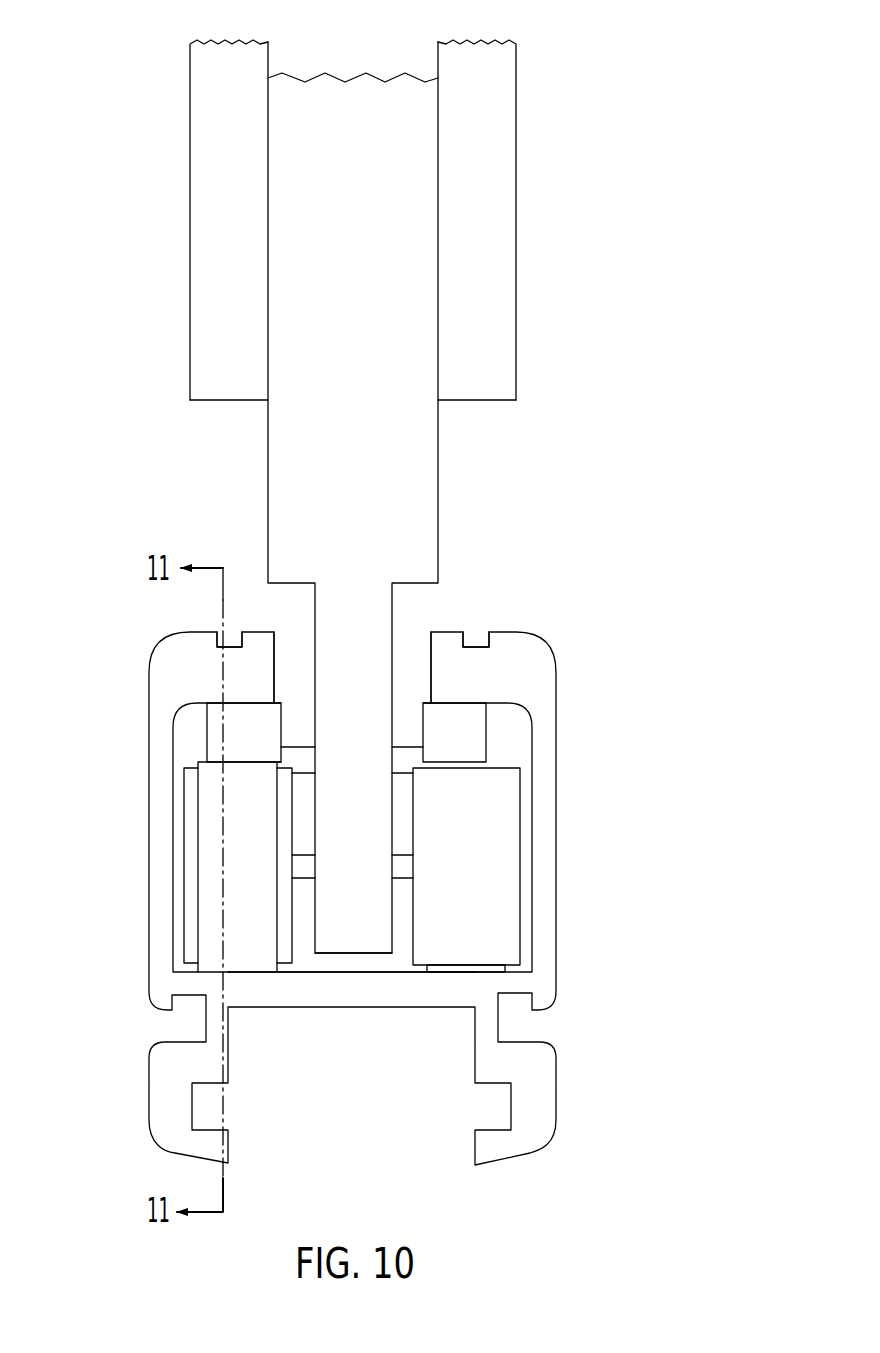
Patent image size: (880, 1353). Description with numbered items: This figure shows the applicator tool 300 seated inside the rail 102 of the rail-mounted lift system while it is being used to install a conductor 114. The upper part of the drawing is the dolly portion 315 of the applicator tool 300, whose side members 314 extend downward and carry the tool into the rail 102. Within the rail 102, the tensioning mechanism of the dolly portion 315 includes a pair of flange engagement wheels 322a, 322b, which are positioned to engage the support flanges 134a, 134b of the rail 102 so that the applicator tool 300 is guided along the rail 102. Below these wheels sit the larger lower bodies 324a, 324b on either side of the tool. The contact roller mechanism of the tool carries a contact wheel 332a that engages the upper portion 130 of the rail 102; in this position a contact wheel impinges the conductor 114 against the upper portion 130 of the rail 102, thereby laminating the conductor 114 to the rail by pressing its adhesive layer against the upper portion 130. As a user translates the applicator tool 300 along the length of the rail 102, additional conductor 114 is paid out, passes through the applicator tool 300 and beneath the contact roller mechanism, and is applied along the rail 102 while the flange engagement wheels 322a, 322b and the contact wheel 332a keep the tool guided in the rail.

The applicator tool 300 is at (429, 496).
The side walls 314 is at (190, 180).
The dolly portion 315 is at (440, 311).
The rail 102 is at (383, 864).
The support flange 134a is at (509, 637).
The support flange 134b is at (158, 645).
The flange engagement wheel 322a is at (487, 737).
The flange engagement wheel 322b is at (207, 745).
The lower block 324a is at (497, 828).
The lower block 324b is at (184, 840).
The contact wheel 332a is at (505, 968).
The upper portion 130 is at (357, 960).
The conductor 114 is at (204, 941).